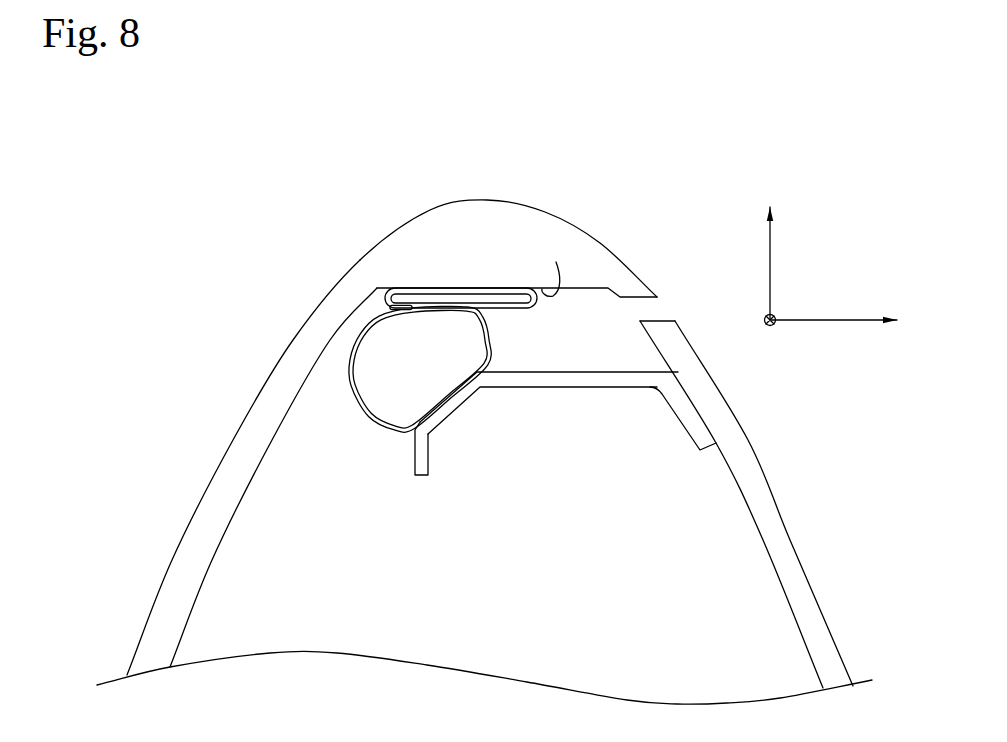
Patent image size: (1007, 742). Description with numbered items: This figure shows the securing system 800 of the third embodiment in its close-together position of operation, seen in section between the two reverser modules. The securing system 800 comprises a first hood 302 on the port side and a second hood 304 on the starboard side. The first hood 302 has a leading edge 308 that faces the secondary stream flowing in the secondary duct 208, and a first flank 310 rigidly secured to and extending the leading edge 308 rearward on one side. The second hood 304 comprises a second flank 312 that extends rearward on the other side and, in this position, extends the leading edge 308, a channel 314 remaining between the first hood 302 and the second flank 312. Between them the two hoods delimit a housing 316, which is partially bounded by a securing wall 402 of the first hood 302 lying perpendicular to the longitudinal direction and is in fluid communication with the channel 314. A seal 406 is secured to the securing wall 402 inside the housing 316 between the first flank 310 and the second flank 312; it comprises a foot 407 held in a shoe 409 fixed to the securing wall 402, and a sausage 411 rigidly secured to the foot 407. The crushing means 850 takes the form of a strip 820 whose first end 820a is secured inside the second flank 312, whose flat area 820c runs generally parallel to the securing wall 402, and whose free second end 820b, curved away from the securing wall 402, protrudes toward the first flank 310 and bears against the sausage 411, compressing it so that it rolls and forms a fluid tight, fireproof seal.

The securing system 800 is at (181, 236).
The first hood 302 is at (172, 377).
The second hood 304 is at (803, 484).
The leading edge 308 is at (487, 199).
The first flank 310 is at (170, 623).
The second flank 312 is at (798, 573).
The channel 314 is at (650, 311).
The housing 316 is at (597, 350).
The securing wall 402 is at (556, 262).
The seal 406 is at (352, 467).
The foot 407 is at (412, 308).
The shoe 409 is at (423, 289).
The sausage 411 is at (353, 367).
The strip 820 is at (615, 488).
The first end 820a is at (673, 393).
The second end 820b is at (448, 403).
The flat area 820c is at (580, 380).
The crushing means 850 is at (545, 543).
The secondary duct 208 is at (893, 231).